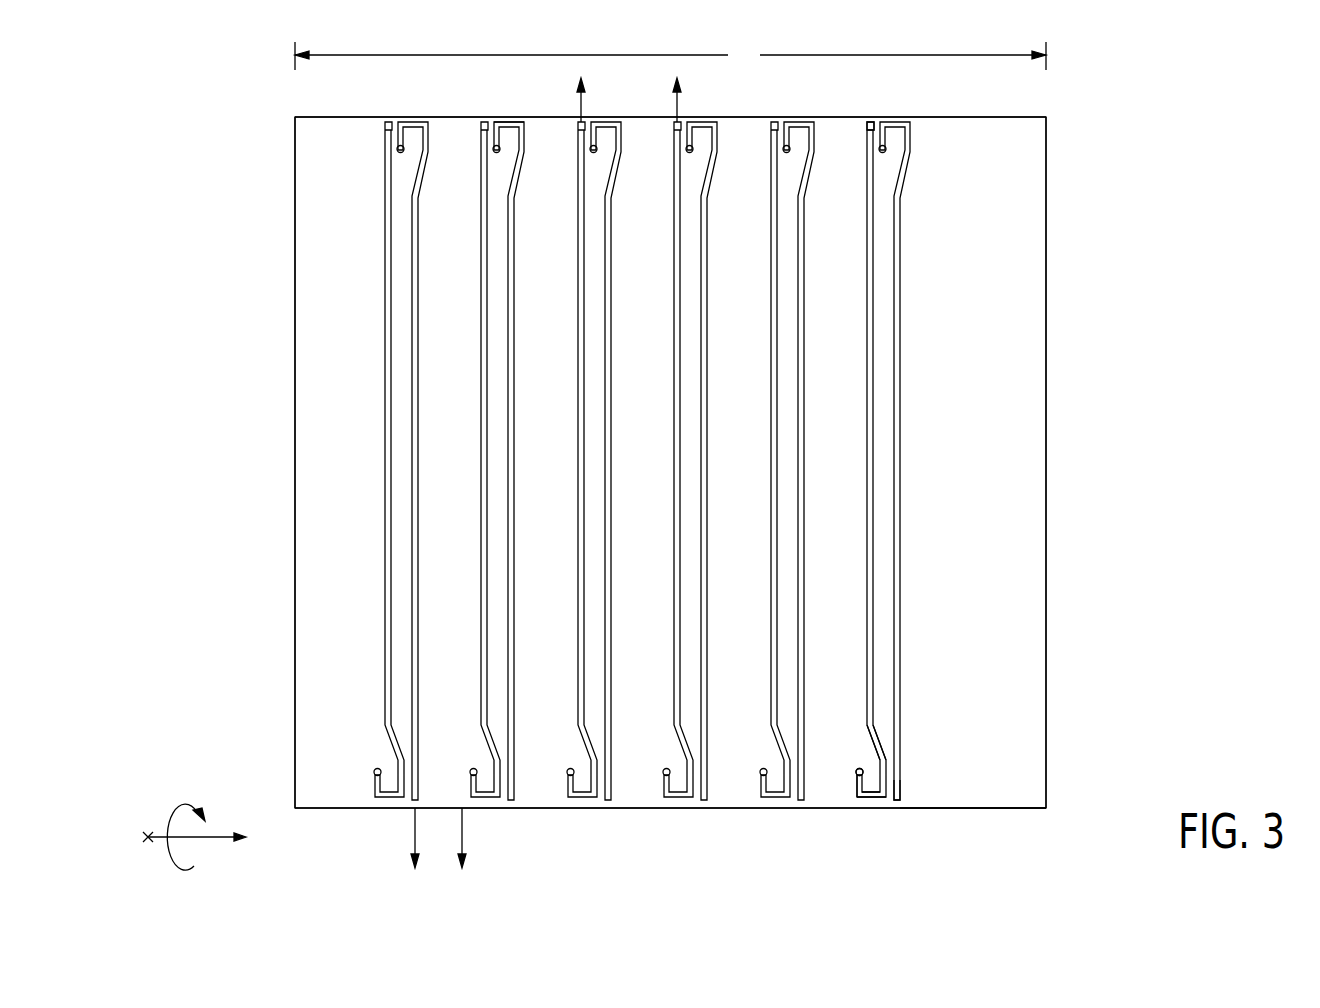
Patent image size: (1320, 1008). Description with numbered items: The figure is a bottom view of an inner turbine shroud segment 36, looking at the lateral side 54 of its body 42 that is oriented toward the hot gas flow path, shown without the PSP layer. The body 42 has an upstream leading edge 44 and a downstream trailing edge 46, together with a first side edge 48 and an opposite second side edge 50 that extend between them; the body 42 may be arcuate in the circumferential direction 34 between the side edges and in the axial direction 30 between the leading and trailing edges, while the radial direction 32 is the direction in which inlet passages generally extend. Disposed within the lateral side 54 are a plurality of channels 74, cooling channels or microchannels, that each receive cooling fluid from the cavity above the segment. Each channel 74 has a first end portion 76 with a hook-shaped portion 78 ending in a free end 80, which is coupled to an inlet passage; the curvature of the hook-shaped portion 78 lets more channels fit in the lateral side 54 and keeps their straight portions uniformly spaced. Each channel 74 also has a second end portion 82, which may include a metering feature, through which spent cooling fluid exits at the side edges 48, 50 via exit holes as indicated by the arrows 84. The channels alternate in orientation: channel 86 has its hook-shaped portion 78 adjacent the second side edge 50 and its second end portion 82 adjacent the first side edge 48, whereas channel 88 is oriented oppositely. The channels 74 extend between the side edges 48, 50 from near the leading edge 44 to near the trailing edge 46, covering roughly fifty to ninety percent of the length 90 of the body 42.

The axial direction 30 is at (214, 840).
The radial direction 32 is at (150, 832).
The circumferential direction 34 is at (180, 805).
The inner turbine shroud segment 36 is at (1010, 808).
The body 42 is at (1035, 808).
The leading edge 44 is at (295, 656).
The trailing edge 46 is at (1047, 565).
The first side edge 48 is at (633, 808).
The second side edge 50 is at (554, 116).
The lateral side 54 is at (944, 150).
The channel 74 is at (898, 122).
The first end portion 76 is at (856, 785).
The hook-shaped portion 78 is at (861, 796).
The free end 80 is at (868, 742).
The second end portion 82 is at (868, 122).
The arrows 84 is at (581, 112).
The channel 86 is at (410, 124).
The channel 88 is at (390, 118).
The length 90 is at (670, 55).